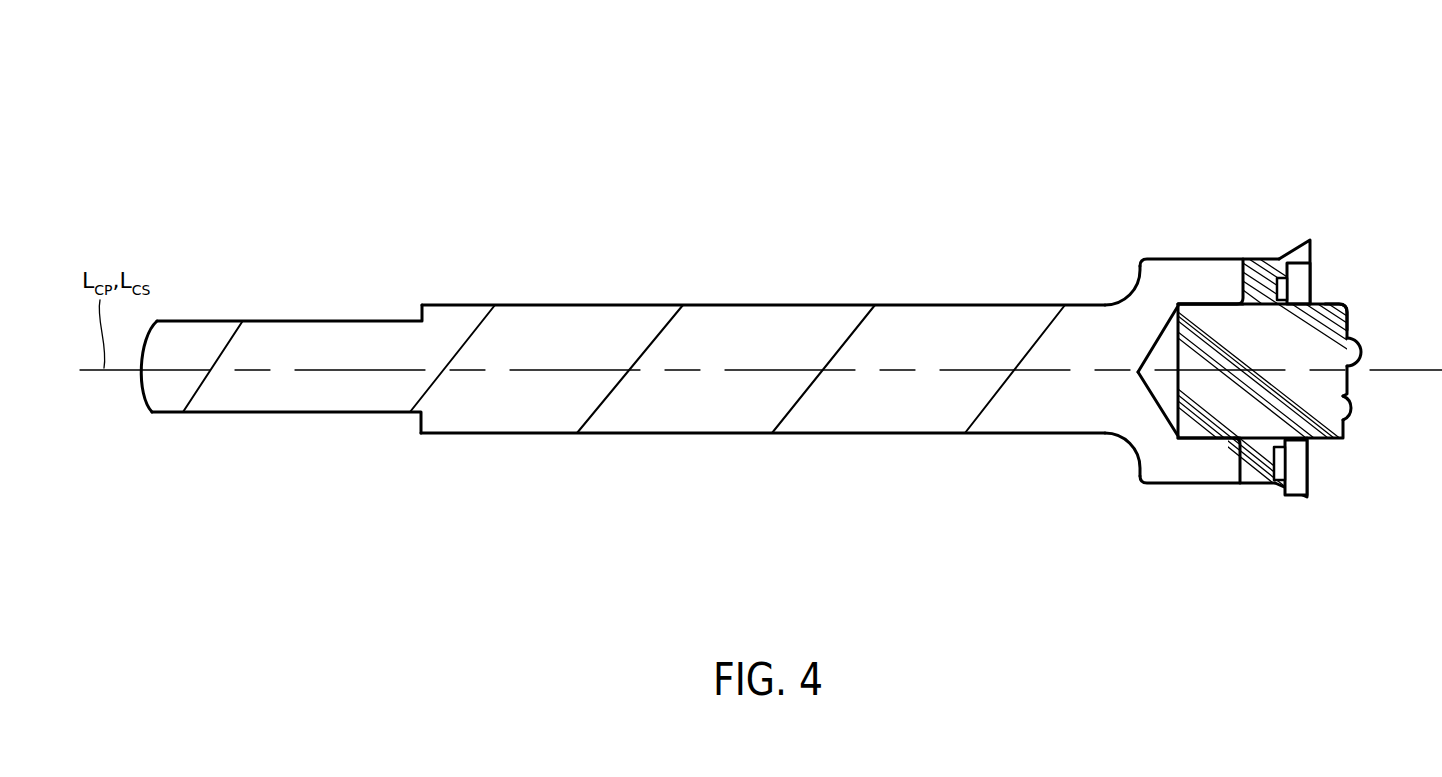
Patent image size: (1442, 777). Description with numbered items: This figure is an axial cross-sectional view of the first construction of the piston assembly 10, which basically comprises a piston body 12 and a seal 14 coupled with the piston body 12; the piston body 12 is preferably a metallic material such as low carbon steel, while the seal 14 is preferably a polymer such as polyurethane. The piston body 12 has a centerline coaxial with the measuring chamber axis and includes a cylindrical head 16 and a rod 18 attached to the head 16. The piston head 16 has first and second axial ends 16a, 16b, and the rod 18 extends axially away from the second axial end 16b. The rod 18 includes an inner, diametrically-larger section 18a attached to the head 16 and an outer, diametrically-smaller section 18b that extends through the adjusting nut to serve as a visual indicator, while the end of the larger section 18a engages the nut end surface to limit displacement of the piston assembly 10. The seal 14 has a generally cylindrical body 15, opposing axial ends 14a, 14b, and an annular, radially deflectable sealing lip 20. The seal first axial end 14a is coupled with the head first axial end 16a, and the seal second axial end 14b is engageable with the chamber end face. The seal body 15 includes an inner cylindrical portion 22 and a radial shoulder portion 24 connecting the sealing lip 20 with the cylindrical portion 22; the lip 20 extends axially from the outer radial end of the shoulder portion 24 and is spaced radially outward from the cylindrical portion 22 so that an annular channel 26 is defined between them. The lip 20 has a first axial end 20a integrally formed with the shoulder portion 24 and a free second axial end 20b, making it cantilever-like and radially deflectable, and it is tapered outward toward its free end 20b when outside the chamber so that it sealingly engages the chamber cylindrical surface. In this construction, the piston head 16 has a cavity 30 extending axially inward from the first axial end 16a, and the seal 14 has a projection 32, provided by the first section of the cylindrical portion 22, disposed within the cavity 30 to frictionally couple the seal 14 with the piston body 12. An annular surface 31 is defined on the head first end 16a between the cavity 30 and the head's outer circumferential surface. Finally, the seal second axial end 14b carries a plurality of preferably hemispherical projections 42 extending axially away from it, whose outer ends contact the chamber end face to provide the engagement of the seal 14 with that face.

The piston assembly 10 is at (635, 125).
The piston body 12 is at (530, 238).
The seal 14 is at (1385, 215).
The seal first axial end 14a is at (1352, 320).
The seal second axial end 14b is at (1170, 393).
The seal body 15 is at (1324, 230).
The piston head 16 is at (1193, 198).
The piston head first axial end 16a is at (1257, 260).
The piston head second axial end 16b is at (1140, 272).
The rod 18 is at (557, 448).
The inner, diametrically-larger rod section 18a is at (708, 422).
The outer, diametrically-smaller rod section 18b is at (315, 402).
The sealing lip 20 is at (1287, 512).
The sealing lip first axial end 20a is at (1275, 485).
The sealing lip second axial end 20b is at (1307, 498).
The inner cylindrical portion 22 is at (1340, 451).
The radial shoulder portion 24 is at (1220, 462).
The annular channel 26 is at (1298, 284).
The cavity 30 is at (1167, 334).
The annular surface 31 is at (1264, 296).
The projection 32 is at (1215, 293).
The projections 42 is at (1360, 350).